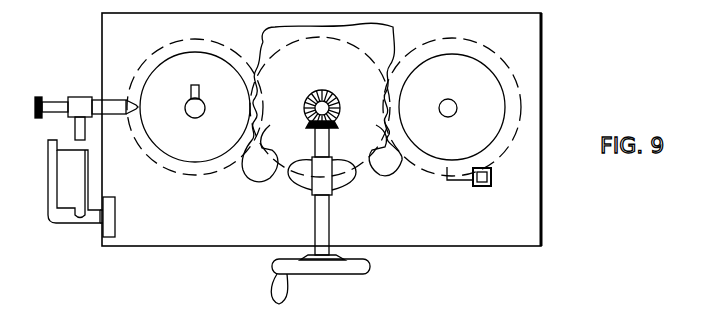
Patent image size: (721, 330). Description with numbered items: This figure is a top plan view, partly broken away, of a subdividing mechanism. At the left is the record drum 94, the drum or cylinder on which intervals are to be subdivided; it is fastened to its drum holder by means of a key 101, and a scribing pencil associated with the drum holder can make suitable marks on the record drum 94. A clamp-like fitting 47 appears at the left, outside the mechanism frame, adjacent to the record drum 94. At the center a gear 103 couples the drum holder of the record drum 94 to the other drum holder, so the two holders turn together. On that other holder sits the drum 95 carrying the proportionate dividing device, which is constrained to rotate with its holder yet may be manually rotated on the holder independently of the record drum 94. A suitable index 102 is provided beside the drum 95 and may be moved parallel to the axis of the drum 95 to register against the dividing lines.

The clamp with adjusting screw 47 is at (112, 102).
The record drum 94 is at (195, 107).
The drum carrying the proportionate dividing device 95 is at (452, 107).
The key 101 is at (187, 83).
The index 102 is at (453, 182).
The gear 103 is at (322, 163).